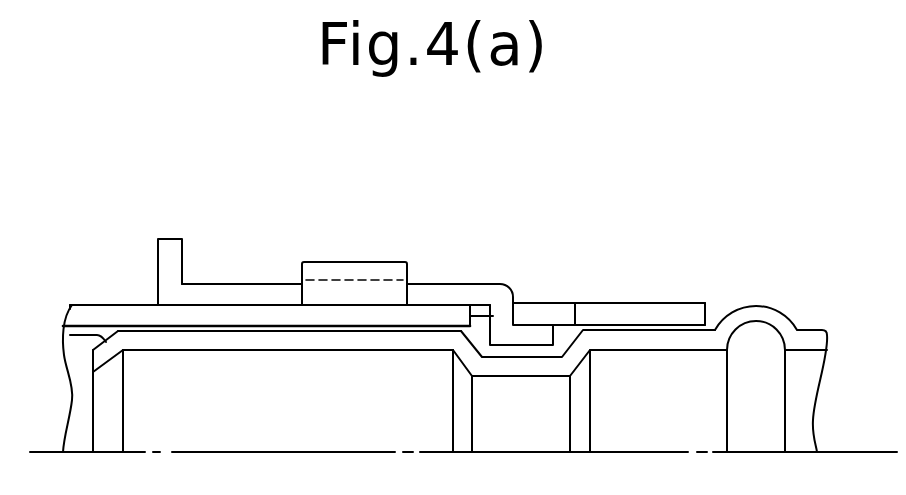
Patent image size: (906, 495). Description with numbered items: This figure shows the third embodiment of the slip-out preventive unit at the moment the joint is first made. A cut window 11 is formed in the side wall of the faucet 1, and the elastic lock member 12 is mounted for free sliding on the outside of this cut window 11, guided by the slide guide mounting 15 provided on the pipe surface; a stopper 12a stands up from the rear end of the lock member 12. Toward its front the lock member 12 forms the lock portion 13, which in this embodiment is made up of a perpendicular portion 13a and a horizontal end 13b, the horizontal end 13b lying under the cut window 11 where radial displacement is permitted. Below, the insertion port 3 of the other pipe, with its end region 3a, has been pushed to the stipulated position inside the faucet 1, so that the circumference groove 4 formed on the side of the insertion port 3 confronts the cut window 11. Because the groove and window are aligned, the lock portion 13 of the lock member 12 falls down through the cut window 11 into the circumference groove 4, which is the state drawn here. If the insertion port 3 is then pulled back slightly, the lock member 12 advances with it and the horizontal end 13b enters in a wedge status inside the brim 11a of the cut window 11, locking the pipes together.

The faucet 1 is at (677, 315).
The cut window 11 is at (565, 303).
The brim of cut window 11a is at (592, 318).
The lock member 12 is at (453, 290).
The stopper 12a is at (173, 258).
The lock portion 13 is at (530, 282).
The perpendicular portion 13a is at (470, 316).
The horizontal end 13b is at (562, 313).
The slide guide mounting 15 is at (350, 267).
The insertion port 3 is at (143, 365).
The leg portion of frame 3a is at (72, 336).
The circumference groove 4 is at (482, 348).